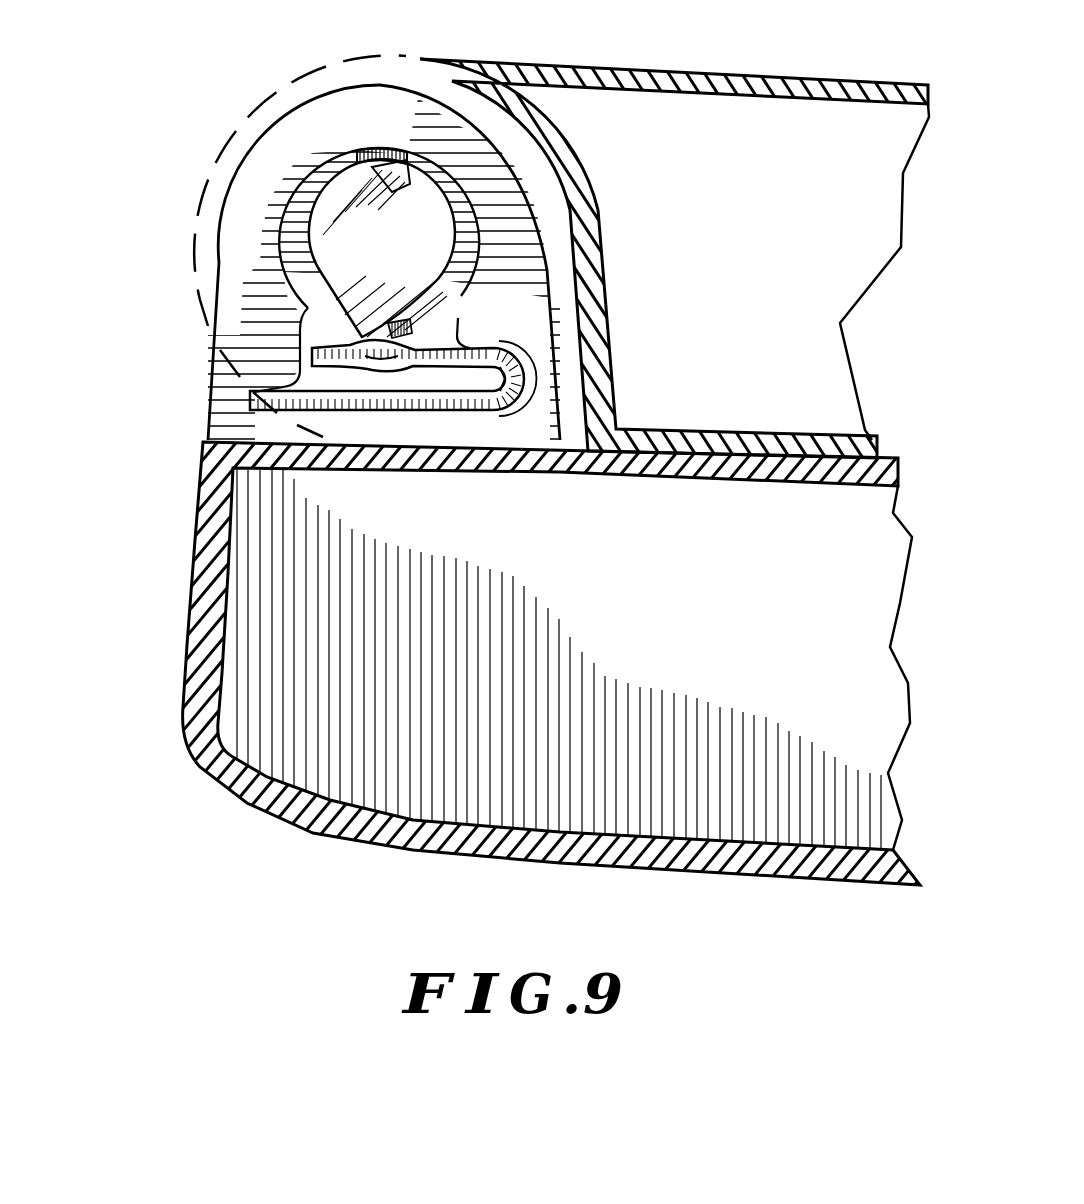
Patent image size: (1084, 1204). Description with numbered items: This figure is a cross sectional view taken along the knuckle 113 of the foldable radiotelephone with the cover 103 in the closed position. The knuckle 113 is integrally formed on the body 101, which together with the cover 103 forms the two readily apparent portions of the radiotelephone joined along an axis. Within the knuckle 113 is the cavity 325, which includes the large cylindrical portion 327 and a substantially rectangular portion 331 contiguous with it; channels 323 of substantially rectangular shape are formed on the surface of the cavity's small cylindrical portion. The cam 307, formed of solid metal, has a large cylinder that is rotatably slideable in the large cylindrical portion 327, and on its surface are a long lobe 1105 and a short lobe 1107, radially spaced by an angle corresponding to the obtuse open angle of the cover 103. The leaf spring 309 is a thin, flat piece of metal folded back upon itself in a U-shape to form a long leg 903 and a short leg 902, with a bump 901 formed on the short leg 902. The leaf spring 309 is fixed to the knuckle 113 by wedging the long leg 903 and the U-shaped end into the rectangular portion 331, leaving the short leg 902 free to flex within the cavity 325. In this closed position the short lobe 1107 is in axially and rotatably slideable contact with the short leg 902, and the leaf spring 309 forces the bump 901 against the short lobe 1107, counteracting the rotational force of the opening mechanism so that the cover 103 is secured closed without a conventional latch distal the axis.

The body 101 is at (187, 643).
The cover 103 is at (757, 70).
The knuckle 113 is at (228, 192).
The cam 307 is at (458, 240).
The leaf spring 309 is at (508, 345).
The channels 323 is at (398, 160).
The cavity 325 is at (459, 175).
The large cylindrical portion 327 is at (468, 216).
The rectangular portion 331 is at (517, 365).
The bump 901 is at (393, 333).
The short leg 902 is at (312, 354).
The long leg 903 is at (252, 392).
The long lobe 1105 is at (368, 183).
The short lobe 1107 is at (357, 333).